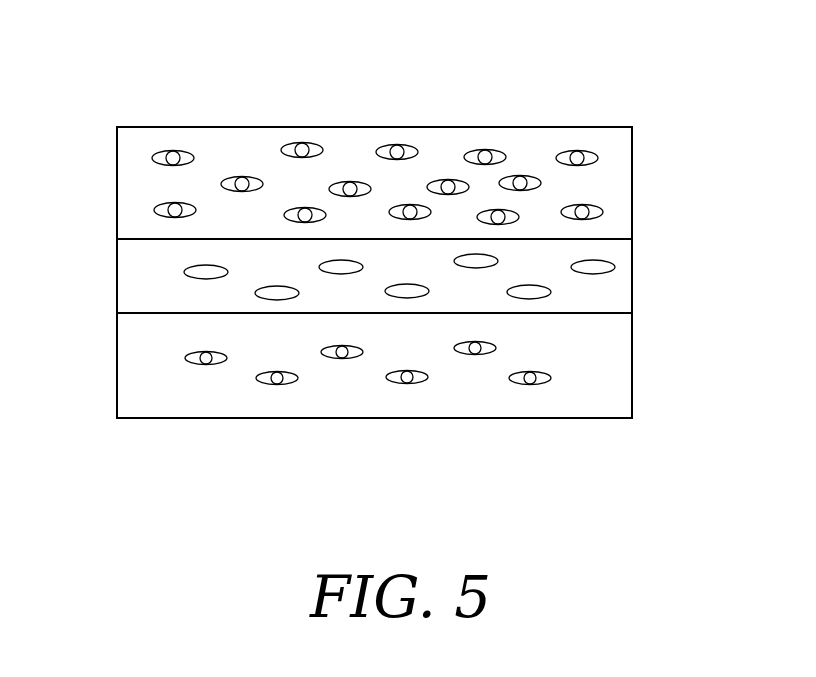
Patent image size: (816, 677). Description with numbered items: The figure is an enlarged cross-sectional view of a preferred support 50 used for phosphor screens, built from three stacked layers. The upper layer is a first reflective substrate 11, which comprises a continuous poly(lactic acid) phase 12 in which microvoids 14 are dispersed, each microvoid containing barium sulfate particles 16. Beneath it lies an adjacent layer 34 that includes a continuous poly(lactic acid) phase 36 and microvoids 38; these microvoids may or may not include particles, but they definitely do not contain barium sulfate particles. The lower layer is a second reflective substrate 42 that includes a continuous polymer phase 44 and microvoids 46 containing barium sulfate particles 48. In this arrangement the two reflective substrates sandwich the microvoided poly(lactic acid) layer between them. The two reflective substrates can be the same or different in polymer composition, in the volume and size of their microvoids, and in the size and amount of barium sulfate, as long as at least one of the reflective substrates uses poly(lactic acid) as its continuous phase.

The support 50 is at (624, 100).
The first reflective substrate 11 is at (632, 188).
The continuous poly(lactic acid) phase 12 is at (131, 172).
The microvoids 14 is at (305, 147).
The barium sulfate particles 16 is at (398, 148).
The adjacent layer 34 is at (632, 268).
The continuous poly(lactic acid) phase 36 is at (131, 282).
The microvoids 38 is at (548, 293).
The second reflective substrate 42 is at (632, 370).
The continuous polymer phase 44 is at (130, 350).
The microvoids 46 is at (260, 383).
The barium sulfate particles 48 is at (412, 380).